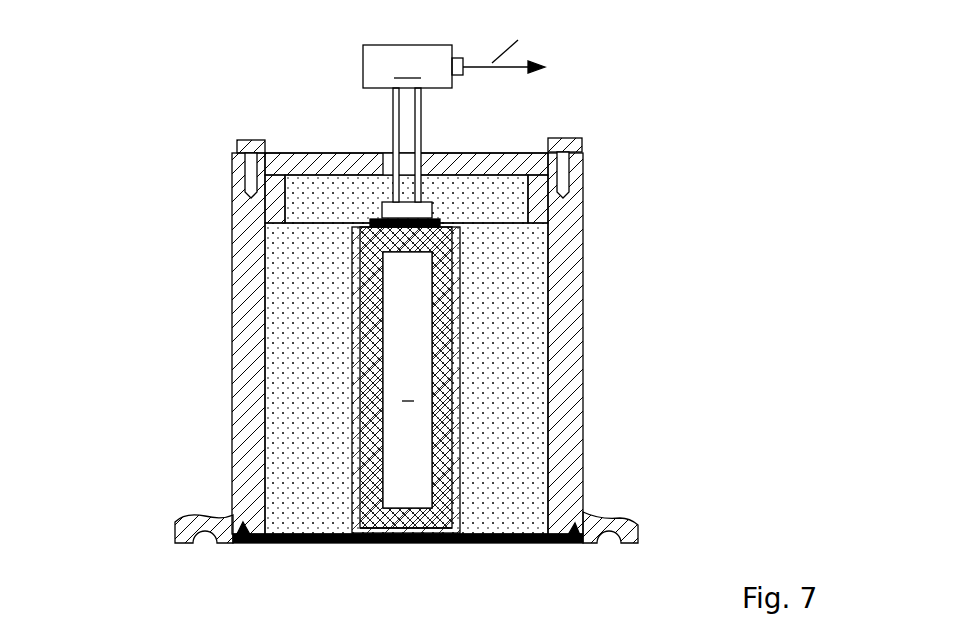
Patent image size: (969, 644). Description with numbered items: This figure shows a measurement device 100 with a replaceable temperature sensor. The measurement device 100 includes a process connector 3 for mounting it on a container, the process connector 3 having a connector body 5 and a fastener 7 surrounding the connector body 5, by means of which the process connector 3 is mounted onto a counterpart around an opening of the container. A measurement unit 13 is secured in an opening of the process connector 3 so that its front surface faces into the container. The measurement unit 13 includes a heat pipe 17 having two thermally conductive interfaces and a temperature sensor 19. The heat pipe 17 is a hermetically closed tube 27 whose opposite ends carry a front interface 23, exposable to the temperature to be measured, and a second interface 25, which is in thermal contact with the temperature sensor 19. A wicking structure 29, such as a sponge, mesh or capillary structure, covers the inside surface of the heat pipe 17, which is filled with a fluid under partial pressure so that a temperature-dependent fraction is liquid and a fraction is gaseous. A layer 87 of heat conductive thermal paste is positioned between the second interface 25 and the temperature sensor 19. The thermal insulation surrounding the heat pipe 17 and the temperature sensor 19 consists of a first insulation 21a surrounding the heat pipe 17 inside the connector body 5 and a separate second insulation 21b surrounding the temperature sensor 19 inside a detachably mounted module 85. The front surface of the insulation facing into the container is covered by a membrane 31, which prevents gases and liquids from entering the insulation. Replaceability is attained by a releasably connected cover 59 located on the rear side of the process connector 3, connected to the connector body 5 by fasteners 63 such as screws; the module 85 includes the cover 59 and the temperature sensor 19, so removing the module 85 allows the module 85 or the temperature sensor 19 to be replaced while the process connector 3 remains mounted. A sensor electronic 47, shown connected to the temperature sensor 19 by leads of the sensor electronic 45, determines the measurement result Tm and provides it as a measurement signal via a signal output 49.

The measurement device 100 is at (93, 257).
The process connector 3 is at (640, 403).
The connector body 5 is at (583, 457).
The fastener 7 is at (595, 512).
The membrane 31 is at (327, 540).
The measurement unit 13 is at (662, 140).
The first insulation 21a is at (287, 478).
The second insulation 21b is at (300, 208).
The layer of heat conductive thermal paste 87 is at (393, 227).
The heat pipe 17 is at (632, 292).
The hermetically closed tube 27 is at (457, 365).
The wicking structure 29 is at (445, 400).
The front interface 23 is at (420, 530).
The second interface 25 is at (398, 232).
The temperature sensor 19 is at (385, 207).
The detachably mounted module 85 is at (135, 32).
The cover 59 is at (345, 174).
The fasteners 63 is at (248, 148).
The sensor electronic 45 is at (395, 133).
The sensor electronic 47 is at (407, 66).
The signal output 49 is at (460, 60).